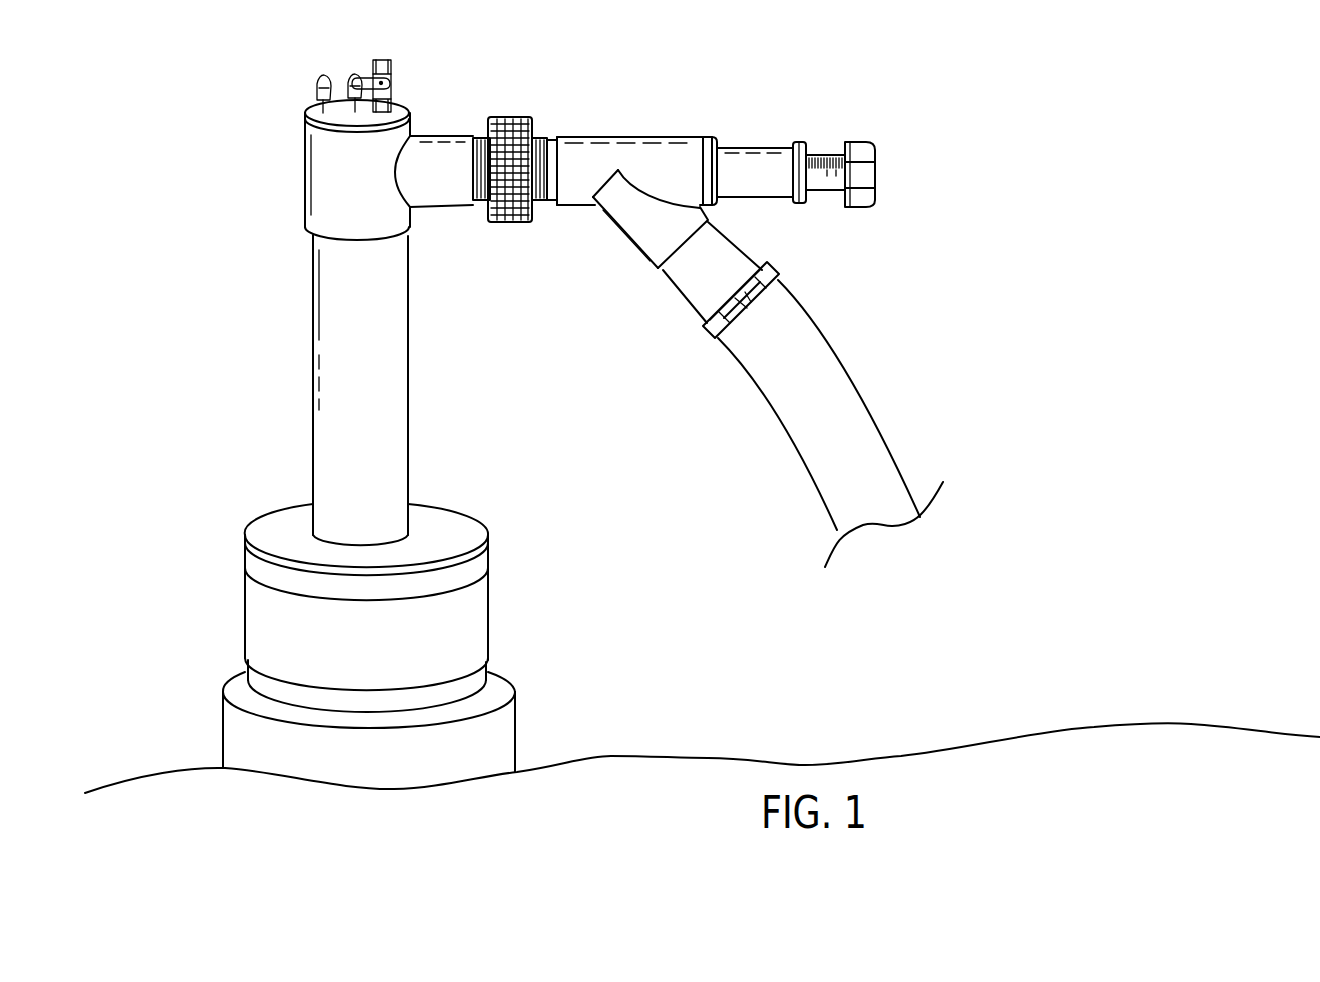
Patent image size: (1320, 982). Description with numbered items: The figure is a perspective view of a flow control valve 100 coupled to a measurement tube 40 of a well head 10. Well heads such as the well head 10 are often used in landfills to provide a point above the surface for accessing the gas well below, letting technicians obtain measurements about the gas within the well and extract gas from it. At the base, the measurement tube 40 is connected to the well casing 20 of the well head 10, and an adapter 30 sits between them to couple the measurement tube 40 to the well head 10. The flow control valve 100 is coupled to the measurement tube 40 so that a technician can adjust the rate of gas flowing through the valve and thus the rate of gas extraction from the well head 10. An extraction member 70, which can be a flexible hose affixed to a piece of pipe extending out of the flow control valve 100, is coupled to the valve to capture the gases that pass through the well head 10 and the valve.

The well head 10 is at (702, 407).
The well casing 20 is at (516, 728).
The adapter 30 is at (489, 625).
The measurement tube 40 is at (438, 358).
The extraction member 70 is at (879, 428).
The flow control valve 100 is at (624, 294).